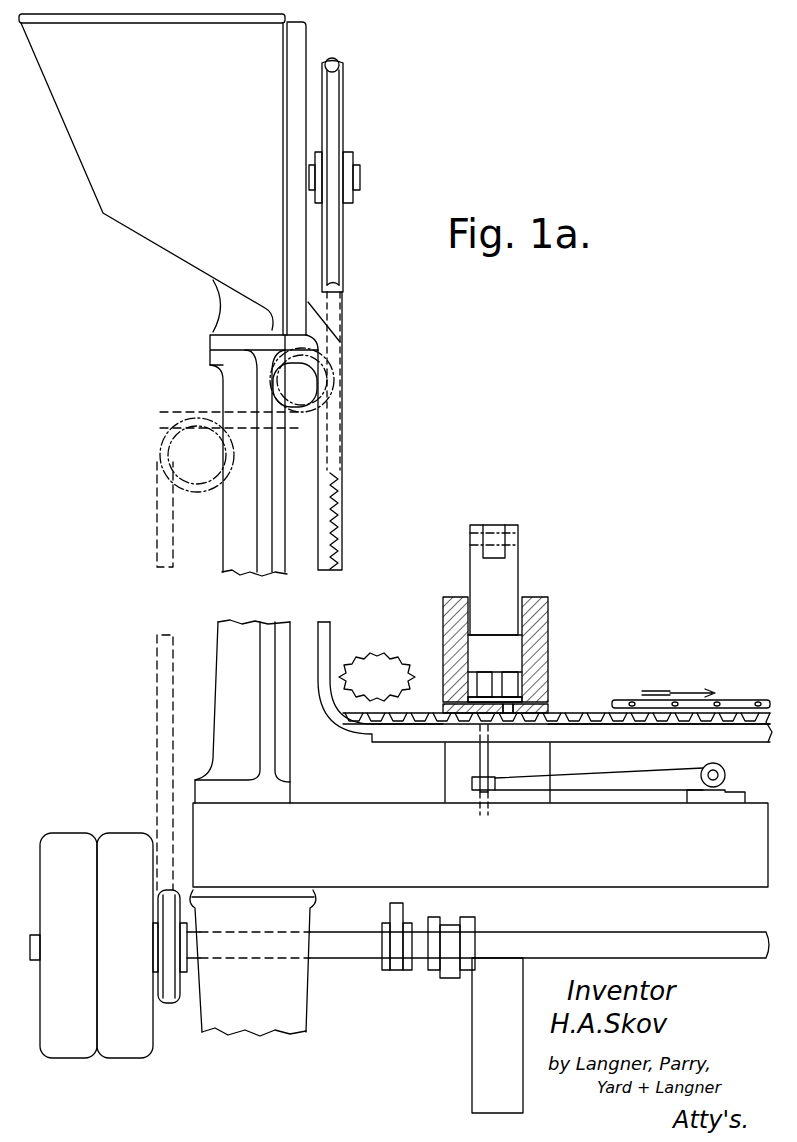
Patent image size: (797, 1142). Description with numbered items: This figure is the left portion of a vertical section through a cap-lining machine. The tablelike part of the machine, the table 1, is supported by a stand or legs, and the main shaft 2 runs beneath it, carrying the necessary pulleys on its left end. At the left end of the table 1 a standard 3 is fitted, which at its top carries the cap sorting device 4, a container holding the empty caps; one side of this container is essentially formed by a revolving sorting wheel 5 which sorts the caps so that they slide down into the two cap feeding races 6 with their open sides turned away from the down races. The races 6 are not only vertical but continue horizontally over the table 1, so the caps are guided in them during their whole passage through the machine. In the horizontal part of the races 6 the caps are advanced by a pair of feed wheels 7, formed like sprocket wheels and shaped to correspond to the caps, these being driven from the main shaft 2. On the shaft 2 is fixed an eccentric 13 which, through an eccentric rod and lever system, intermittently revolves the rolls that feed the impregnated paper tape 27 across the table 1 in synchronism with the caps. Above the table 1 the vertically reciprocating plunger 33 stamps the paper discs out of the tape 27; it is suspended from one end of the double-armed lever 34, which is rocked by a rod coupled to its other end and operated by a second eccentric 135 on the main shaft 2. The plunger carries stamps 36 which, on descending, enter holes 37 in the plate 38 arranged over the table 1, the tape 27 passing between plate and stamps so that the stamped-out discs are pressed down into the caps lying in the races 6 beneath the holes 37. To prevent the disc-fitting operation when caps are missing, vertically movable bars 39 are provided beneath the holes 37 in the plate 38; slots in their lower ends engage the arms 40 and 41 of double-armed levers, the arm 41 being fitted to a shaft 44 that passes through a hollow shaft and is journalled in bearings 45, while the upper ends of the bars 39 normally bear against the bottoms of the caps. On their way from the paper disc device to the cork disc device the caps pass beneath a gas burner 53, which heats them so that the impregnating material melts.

The table 1 is at (480, 845).
The main shaft 2 is at (605, 932).
The standard 3 is at (252, 575).
The cap sorting device 4 is at (168, 189).
The sorting wheel 5 is at (304, 266).
The cap feeding races 6 is at (406, 740).
The feed wheels 7 is at (377, 677).
The eccentric 13 is at (397, 971).
The eccentric 135 is at (448, 979).
The paper tape 27 is at (477, 702).
The plunger 33 is at (495, 649).
The double-armed lever 34 is at (496, 527).
The stamps 36 is at (510, 682).
The holes 37 is at (530, 692).
The plate 38 is at (540, 717).
The vertically movable bars 39 is at (468, 770).
The lever arm 40 is at (587, 769).
The lever arm 41 is at (587, 779).
The shaft 44 is at (722, 773).
The bearings 45 is at (741, 793).
The gas burner 53 is at (697, 702).